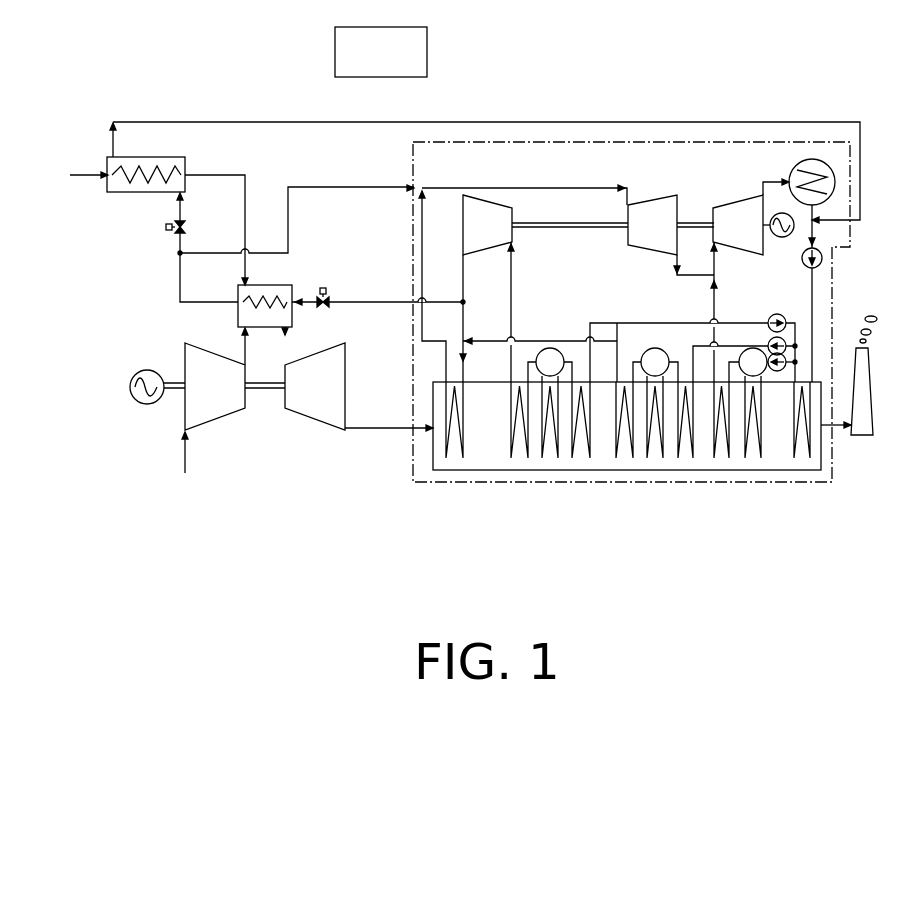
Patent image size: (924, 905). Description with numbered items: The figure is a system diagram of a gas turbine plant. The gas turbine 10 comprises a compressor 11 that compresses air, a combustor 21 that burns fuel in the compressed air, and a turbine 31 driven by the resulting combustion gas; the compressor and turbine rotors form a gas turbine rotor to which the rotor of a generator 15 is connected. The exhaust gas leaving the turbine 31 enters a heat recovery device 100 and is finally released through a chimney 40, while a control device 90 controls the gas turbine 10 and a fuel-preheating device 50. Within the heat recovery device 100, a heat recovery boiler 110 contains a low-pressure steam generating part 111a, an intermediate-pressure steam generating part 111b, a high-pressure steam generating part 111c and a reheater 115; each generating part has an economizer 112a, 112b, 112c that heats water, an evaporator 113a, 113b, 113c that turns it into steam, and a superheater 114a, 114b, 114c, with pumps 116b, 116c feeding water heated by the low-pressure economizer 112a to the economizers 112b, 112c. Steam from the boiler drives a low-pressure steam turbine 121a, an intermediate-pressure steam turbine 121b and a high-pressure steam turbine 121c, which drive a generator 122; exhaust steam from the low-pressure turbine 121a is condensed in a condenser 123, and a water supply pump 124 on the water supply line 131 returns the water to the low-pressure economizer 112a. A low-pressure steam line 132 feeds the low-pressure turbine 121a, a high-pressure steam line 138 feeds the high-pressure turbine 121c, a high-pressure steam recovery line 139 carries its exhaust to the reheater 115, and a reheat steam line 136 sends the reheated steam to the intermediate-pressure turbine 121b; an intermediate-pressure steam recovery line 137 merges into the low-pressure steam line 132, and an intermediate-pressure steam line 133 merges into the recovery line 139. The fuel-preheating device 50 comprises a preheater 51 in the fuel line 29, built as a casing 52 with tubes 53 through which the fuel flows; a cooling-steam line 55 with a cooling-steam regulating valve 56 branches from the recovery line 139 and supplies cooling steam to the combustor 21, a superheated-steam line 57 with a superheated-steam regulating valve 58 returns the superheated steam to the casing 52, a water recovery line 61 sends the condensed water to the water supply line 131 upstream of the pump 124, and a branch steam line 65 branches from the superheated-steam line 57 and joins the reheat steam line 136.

The gas turbine 10 is at (298, 409).
The compressor 11 is at (212, 425).
The generator 15 is at (143, 405).
The combustor 21 is at (238, 315).
The fuel line 29 is at (87, 177).
The turbine 31 is at (312, 425).
The chimney 40 is at (874, 400).
The fuel-preheating device 50 is at (145, 204).
The preheater 51 is at (123, 193).
The casing 52 is at (177, 157).
The tubes 53 is at (128, 164).
The cooling-steam line 55 is at (385, 302).
The cooling-steam regulating valve 56 is at (322, 308).
The superheated-steam line 57 is at (178, 263).
The superheated-steam regulating valve 58 is at (188, 227).
The water recovery line 61 is at (272, 122).
The branch steam line 65 is at (316, 187).
The control device 90 is at (427, 50).
The heat recovery device 100 is at (836, 481).
The heat recovery boiler 110 is at (410, 482).
The low-pressure steam generating part 111a is at (781, 453).
The intermediate-pressure steam generating part 111b is at (652, 453).
The high-pressure steam generating part 111c is at (522, 453).
The low-pressure economizer 112a is at (821, 453).
The intermediate-pressure economizer 112b is at (693, 453).
The high-pressure economizer 112c is at (566, 453).
The low-pressure evaporator 113a is at (753, 462).
The intermediate-pressure evaporator 113b is at (655, 462).
The high-pressure evaporator 113c is at (550, 462).
The low-pressure superheater 114a is at (722, 462).
The intermediate-pressure superheater 114b is at (624, 462).
The high-pressure superheater 114c is at (519, 462).
The reheater 115 is at (455, 462).
The pump 116b is at (786, 335).
The pump 116c is at (768, 318).
The low-pressure steam turbine 121a is at (725, 206).
The intermediate-pressure steam turbine 121b is at (640, 204).
The high-pressure steam turbine 121c is at (513, 208).
The generator 122 is at (782, 237).
The condenser 123 is at (792, 170).
The water supply pump 124 is at (822, 258).
The water supply line 131 is at (813, 293).
The low-pressure steam line 132 is at (713, 300).
The intermediate-pressure steam line 133 is at (545, 341).
The reheat steam line 136 is at (497, 188).
The intermediate-pressure steam recovery line 137 is at (676, 265).
The high-pressure steam line 138 is at (513, 263).
The high-pressure steam recovery line 139 is at (462, 281).